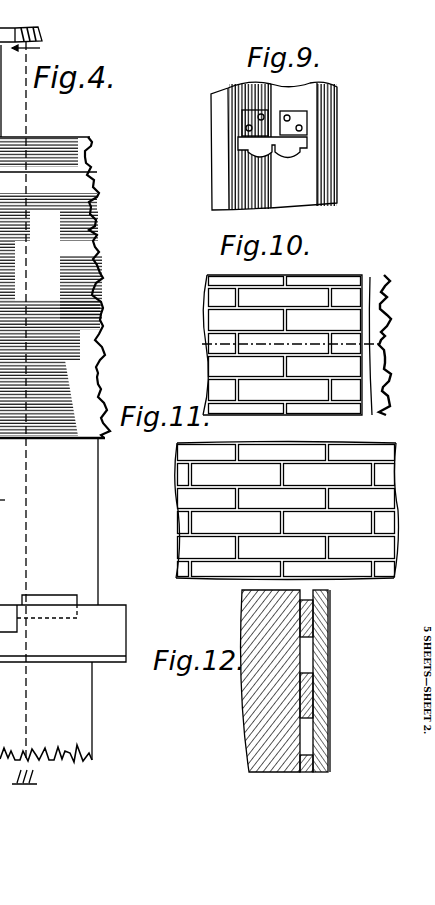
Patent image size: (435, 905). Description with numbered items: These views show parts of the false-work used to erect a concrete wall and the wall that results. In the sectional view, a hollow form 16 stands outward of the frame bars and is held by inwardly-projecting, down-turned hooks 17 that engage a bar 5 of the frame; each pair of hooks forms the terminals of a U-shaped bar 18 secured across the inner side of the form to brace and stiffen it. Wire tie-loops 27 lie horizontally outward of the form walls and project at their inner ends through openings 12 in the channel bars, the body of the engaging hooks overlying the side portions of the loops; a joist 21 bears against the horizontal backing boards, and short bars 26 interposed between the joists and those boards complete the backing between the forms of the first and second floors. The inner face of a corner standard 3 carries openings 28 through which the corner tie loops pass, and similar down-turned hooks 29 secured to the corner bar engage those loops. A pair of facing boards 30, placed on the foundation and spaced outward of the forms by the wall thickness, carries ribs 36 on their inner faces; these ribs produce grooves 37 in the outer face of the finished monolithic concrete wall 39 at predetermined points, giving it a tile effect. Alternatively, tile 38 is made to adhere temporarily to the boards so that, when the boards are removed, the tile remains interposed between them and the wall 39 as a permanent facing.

In FIG. 9, the corner standard 3 is at (211, 94).
In FIG. 4, the bar 5 is at (126, 633).
In FIG. 4, the opening 12 is at (16, 499).
In FIG. 4, the hollow form 16 is at (73, 521).
In FIG. 4, the hook 17 is at (17, 633).
In FIG. 4, the U-shaped bar 18 is at (71, 595).
In FIG. 4, the joist 21 is at (51, 287).
In FIG. 4, the short bar 26 is at (97, 245).
In FIG. 4, the wire tie-loop 27 is at (3, 336).
In FIG. 9, the opening 28 is at (238, 147).
In FIG. 9, the down-turned hook 29 is at (240, 139).
In FIG. 10, the board 30 is at (378, 292).
In FIG. 12, the board 30 is at (330, 673).
In FIG. 10, the rib 36 is at (354, 287).
In FIG. 11, the groove 37 is at (178, 487).
In FIG. 12, the tile 38 is at (309, 697).
In FIG. 11, the monolithic concrete wall 39 is at (303, 452).
In FIG. 12, the monolithic concrete wall 39 is at (250, 727).